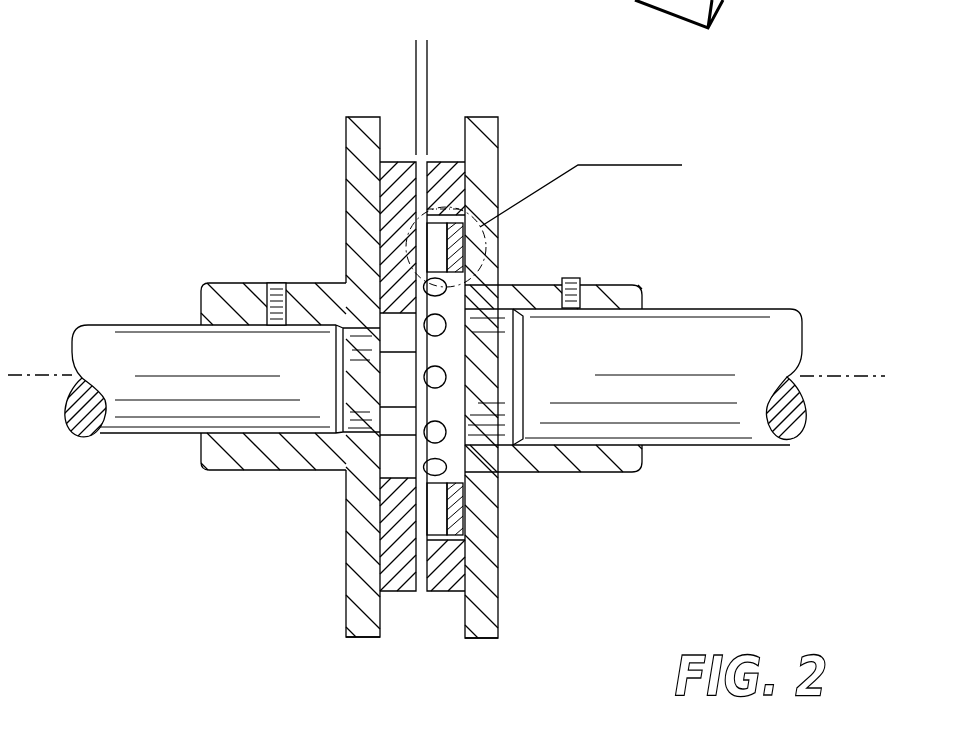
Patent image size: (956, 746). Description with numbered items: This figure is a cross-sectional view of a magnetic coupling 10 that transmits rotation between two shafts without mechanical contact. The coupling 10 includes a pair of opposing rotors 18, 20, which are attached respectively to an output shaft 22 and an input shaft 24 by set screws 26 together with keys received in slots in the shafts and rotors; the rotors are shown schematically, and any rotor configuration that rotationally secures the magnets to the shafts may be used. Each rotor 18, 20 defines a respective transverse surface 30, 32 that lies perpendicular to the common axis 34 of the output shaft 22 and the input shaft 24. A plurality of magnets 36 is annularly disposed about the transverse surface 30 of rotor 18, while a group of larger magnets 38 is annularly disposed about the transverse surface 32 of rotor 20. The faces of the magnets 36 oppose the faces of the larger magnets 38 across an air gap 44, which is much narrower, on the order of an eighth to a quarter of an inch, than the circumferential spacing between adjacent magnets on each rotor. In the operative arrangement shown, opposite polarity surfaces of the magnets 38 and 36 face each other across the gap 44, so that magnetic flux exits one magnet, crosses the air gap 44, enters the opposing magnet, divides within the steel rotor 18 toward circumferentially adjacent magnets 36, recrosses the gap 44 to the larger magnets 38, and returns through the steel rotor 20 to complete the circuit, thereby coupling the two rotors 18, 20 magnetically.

The magnetic coupling 10 is at (190, 193).
The rotor 18 is at (498, 140).
The rotor 20 is at (346, 137).
The output shaft 22 is at (710, 309).
The input shaft 24 is at (137, 324).
The set screws 26 is at (273, 283).
The transverse surface 30 is at (465, 628).
The transverse surface 32 is at (380, 628).
The axis 34 is at (843, 376).
The magnets 36 is at (438, 157).
The larger magnets 38 is at (401, 157).
The air gap 44 is at (380, 55).